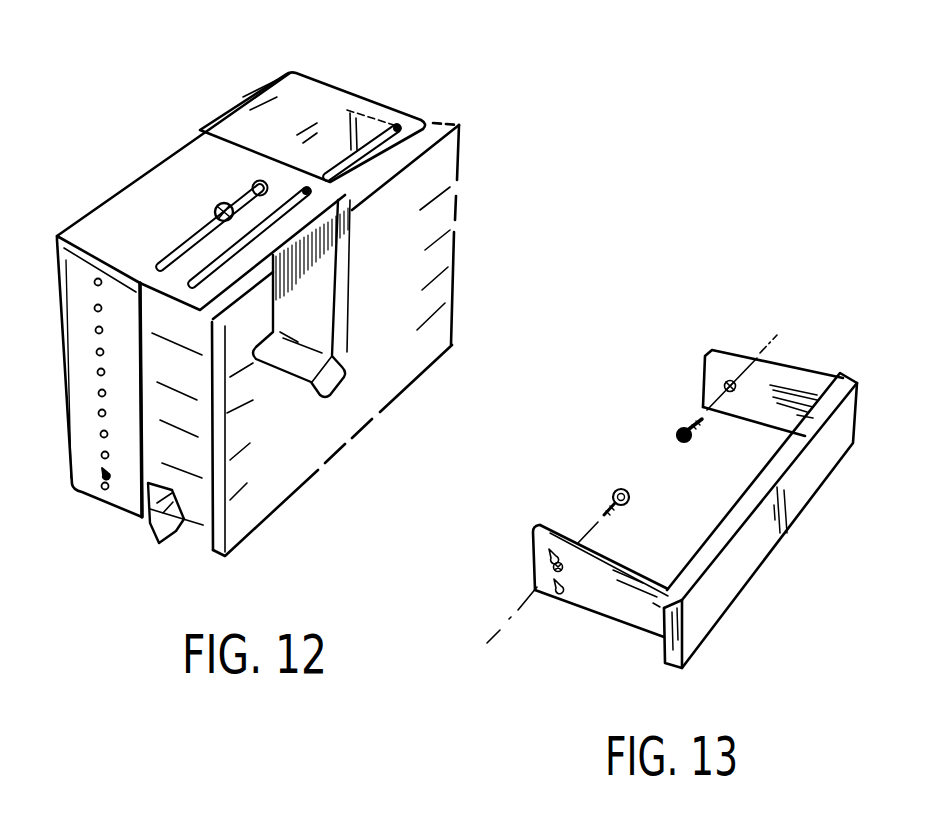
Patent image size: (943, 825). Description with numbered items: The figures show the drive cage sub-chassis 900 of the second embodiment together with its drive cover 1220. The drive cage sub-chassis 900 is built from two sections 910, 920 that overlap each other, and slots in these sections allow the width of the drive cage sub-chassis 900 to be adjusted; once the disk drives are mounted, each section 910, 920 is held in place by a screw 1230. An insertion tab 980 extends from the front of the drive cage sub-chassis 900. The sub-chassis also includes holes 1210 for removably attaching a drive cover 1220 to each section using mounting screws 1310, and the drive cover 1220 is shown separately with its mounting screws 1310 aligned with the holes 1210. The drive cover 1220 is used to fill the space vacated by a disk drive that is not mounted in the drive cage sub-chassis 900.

In FIG. 12, the drive cage sub-chassis 900 is at (333, 70).
In FIG. 12, the section 910 is at (93, 463).
In FIG. 12, the section 920 is at (333, 107).
In FIG. 12, the insertion tab 980 is at (172, 532).
In FIG. 12, the screw 1230 is at (217, 209).
In FIG. 13, the holes 1210 is at (722, 375).
In FIG. 13, the drive cover 1220 is at (793, 493).
In FIG. 13, the mounting screws 1310 is at (620, 487).